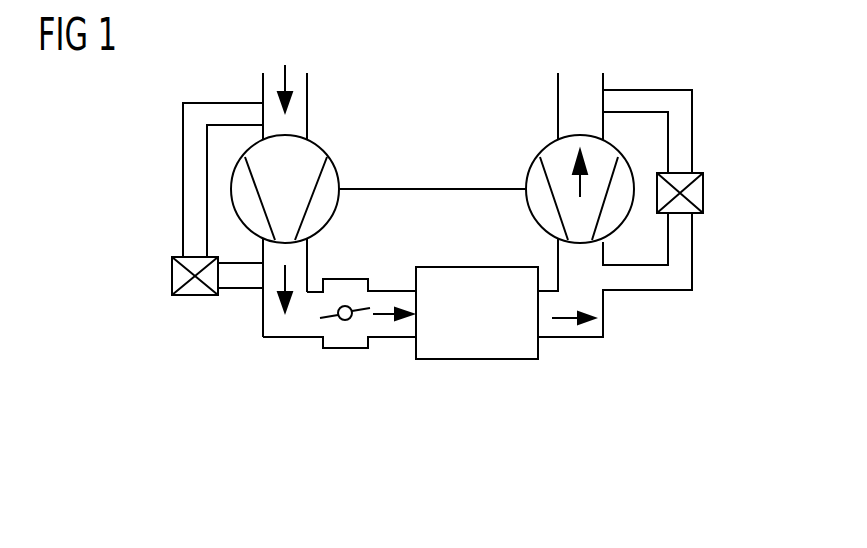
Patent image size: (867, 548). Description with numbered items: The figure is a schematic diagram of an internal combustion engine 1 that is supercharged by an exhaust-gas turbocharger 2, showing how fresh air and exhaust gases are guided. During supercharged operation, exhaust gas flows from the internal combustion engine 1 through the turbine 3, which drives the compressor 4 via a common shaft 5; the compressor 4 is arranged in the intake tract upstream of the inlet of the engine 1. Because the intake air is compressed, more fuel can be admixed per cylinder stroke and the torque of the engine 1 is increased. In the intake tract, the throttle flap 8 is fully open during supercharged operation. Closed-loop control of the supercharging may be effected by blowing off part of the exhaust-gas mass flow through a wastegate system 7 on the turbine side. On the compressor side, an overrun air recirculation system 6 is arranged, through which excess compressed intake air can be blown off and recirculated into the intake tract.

The internal combustion engine 1 is at (478, 347).
The exhaust-gas turbocharger 2 is at (416, 144).
The turbine 3 is at (538, 172).
The compressor 4 is at (327, 170).
The common shaft 5 is at (390, 192).
The overrun air recirculation system 6 is at (172, 273).
The wastegate system 7 is at (697, 193).
The throttle flap 8 is at (348, 320).